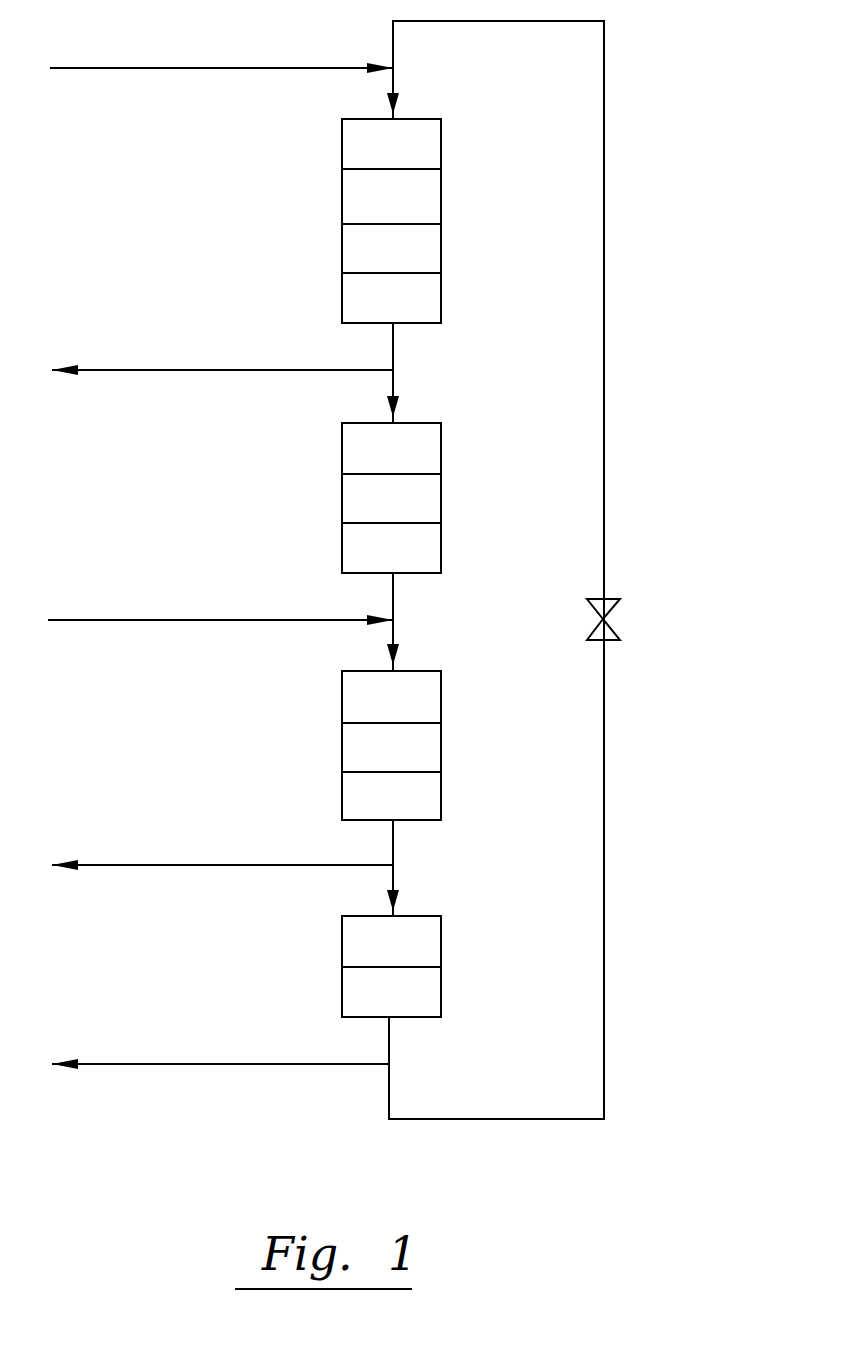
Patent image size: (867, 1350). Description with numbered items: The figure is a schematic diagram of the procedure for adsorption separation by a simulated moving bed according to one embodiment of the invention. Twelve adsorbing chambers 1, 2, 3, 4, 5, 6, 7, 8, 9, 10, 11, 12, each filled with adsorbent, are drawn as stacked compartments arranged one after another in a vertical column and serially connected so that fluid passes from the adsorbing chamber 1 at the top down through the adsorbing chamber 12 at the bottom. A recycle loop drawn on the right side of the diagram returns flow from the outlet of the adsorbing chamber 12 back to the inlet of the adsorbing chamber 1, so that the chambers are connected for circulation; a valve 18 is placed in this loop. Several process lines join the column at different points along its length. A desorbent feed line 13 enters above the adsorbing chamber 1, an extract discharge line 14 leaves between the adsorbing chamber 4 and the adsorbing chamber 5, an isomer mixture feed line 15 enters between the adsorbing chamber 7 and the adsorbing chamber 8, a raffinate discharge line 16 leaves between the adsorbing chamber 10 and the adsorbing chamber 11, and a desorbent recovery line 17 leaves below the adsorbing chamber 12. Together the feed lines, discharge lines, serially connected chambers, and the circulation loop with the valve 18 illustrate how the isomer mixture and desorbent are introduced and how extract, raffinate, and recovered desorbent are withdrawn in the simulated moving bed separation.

The adsorbing chamber 1 is at (433, 154).
The adsorbing chamber 2 is at (433, 207).
The adsorbing chamber 3 is at (433, 257).
The adsorbing chamber 4 is at (433, 305).
The adsorbing chamber 5 is at (433, 457).
The adsorbing chamber 6 is at (433, 505).
The adsorbing chamber 7 is at (433, 555).
The adsorbing chamber 8 is at (433, 705).
The adsorbing chamber 9 is at (433, 755).
The adsorbing chamber 10 is at (433, 802).
The adsorbing chamber 11 is at (433, 949).
The adsorbing chamber 12 is at (433, 1002).
The desorbent feed line 13 is at (222, 70).
The extract discharge line 14 is at (222, 372).
The isomer mixture feed line 15 is at (215, 622).
The raffinate discharge line 16 is at (222, 867).
The desorbent recovery line 17 is at (222, 1066).
The valve 18 is at (636, 619).